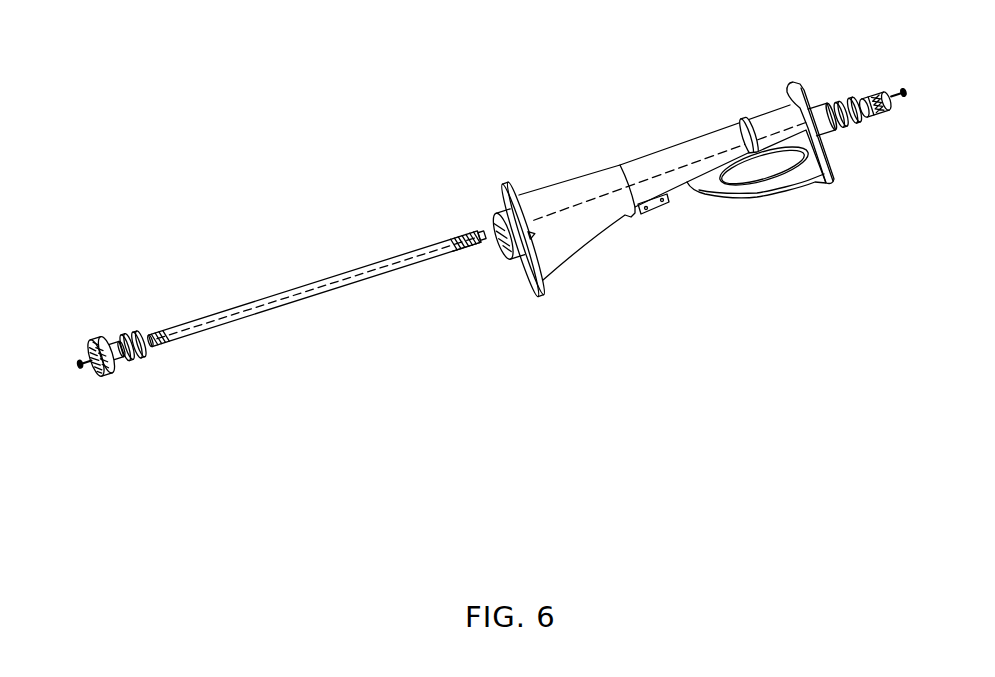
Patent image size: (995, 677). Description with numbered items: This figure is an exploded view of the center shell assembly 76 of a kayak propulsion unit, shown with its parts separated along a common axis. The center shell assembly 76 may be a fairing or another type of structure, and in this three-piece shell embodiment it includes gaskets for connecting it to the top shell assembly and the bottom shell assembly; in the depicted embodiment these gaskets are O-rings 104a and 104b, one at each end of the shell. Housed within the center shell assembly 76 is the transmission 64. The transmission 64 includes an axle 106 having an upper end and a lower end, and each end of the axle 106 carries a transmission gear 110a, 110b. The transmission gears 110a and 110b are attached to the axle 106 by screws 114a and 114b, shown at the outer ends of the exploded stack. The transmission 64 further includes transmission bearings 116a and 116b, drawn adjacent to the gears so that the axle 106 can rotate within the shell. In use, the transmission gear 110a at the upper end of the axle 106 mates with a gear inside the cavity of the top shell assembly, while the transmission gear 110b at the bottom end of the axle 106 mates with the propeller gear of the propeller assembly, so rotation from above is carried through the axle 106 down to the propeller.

The center shell assembly 76 is at (599, 172).
The O-ring 104a is at (808, 108).
The O-ring 104b is at (497, 204).
The axle 106 is at (298, 299).
The transmission 64 is at (455, 258).
The transmission gear 110a is at (874, 114).
The transmission gear 110b is at (111, 375).
The screw 114a is at (907, 87).
The screw 114b is at (78, 361).
The transmission bearing 116a is at (841, 98).
The transmission bearing 116b is at (138, 333).